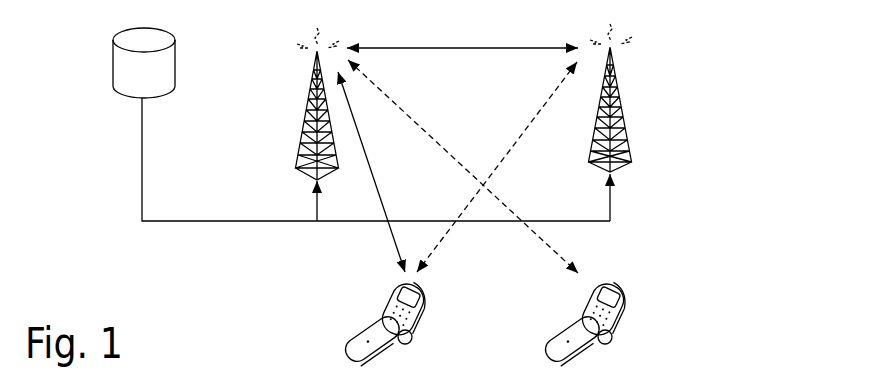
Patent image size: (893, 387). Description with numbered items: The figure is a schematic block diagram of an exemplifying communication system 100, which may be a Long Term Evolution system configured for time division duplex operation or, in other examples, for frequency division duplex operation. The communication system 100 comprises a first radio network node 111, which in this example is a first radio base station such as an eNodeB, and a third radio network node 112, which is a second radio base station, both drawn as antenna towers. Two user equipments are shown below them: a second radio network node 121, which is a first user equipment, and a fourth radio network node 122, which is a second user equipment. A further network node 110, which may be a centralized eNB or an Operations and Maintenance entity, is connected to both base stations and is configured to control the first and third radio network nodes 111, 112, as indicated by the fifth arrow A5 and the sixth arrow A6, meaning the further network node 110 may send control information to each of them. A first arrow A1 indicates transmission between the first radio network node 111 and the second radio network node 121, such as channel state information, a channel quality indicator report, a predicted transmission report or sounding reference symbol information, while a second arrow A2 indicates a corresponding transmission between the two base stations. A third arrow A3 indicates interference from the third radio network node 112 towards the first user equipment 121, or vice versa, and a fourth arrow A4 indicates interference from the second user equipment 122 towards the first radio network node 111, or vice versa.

The communication system 100 is at (694, 76).
The further network node 110 is at (144, 63).
The first radio network node 111 is at (290, 104).
The third radio network node 112 is at (637, 98).
The second radio network node 121 is at (400, 322).
The fourth radio network node 122 is at (603, 322).
The first arrow A1 is at (371, 172).
The second arrow A2 is at (462, 33).
The third arrow A3 is at (497, 167).
The fourth arrow A4 is at (463, 166).
The fifth arrow A5 is at (299, 201).
The sixth arrow A6 is at (632, 198).